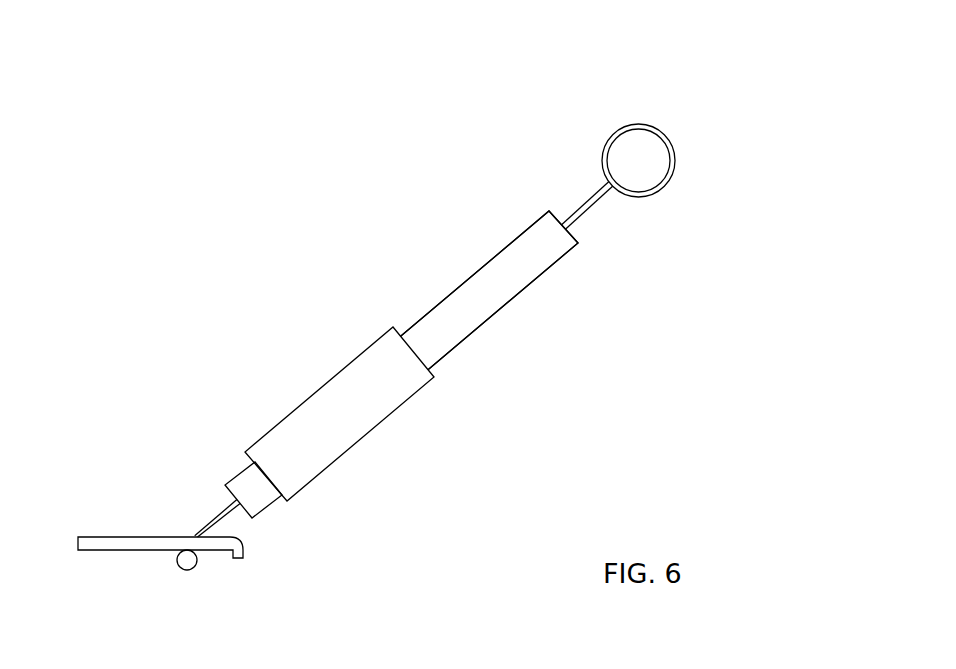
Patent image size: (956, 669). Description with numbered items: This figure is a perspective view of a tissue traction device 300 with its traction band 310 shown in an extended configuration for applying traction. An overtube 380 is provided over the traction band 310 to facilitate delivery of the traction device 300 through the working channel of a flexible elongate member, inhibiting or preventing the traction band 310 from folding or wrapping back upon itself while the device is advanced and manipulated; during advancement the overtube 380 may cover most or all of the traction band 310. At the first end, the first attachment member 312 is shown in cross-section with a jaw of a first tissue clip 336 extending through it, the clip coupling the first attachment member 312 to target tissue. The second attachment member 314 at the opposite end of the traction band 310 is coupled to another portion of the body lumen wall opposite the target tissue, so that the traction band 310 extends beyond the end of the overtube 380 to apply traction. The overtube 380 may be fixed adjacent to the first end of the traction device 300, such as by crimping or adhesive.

The traction device 300 is at (430, 469).
The traction band 310 is at (522, 232).
The first attachment member 312 is at (213, 512).
The second attachment member 314 is at (673, 150).
The first tissue clip 336 is at (247, 553).
The overtube 380 is at (305, 401).